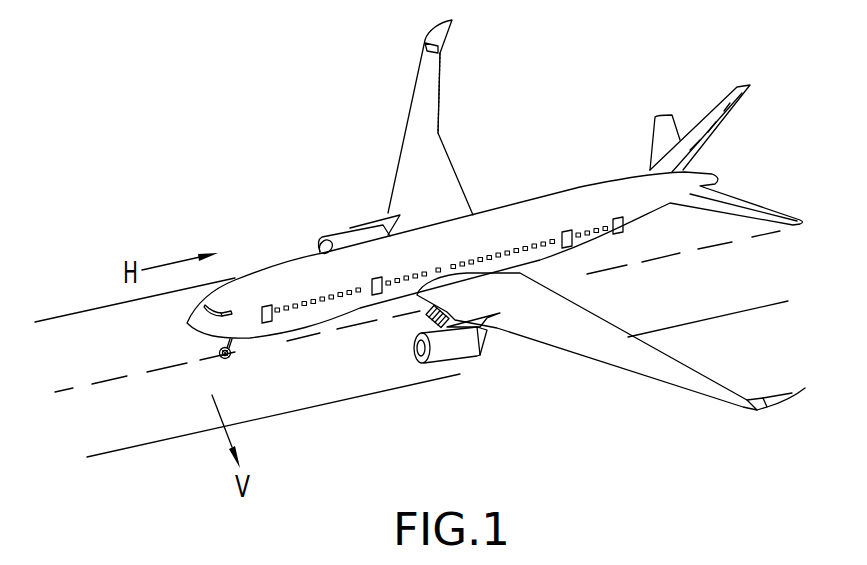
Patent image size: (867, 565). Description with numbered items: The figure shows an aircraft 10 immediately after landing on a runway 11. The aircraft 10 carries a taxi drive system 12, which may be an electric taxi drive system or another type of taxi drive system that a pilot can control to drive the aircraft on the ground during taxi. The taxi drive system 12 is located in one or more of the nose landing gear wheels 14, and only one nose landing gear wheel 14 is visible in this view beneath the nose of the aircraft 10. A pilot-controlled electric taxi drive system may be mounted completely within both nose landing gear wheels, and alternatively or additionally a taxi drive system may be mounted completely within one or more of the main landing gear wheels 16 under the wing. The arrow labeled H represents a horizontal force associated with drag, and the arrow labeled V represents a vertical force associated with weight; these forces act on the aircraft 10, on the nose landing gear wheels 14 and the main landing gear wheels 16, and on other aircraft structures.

The aircraft 10 is at (233, 190).
The runway 11 is at (113, 435).
The taxi drive system 12 is at (229, 358).
The nose landing gear wheel 14 is at (197, 352).
The main landing gear wheel 16 is at (410, 331).